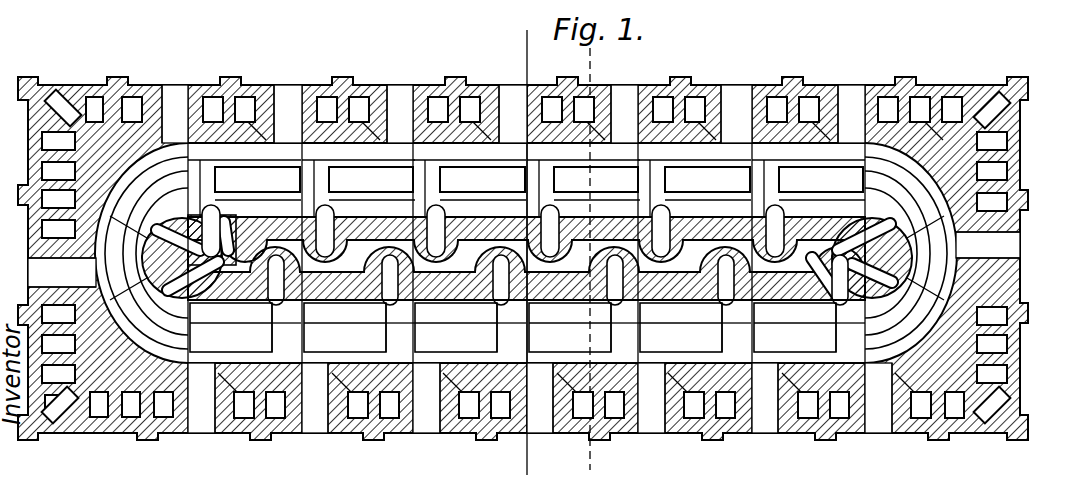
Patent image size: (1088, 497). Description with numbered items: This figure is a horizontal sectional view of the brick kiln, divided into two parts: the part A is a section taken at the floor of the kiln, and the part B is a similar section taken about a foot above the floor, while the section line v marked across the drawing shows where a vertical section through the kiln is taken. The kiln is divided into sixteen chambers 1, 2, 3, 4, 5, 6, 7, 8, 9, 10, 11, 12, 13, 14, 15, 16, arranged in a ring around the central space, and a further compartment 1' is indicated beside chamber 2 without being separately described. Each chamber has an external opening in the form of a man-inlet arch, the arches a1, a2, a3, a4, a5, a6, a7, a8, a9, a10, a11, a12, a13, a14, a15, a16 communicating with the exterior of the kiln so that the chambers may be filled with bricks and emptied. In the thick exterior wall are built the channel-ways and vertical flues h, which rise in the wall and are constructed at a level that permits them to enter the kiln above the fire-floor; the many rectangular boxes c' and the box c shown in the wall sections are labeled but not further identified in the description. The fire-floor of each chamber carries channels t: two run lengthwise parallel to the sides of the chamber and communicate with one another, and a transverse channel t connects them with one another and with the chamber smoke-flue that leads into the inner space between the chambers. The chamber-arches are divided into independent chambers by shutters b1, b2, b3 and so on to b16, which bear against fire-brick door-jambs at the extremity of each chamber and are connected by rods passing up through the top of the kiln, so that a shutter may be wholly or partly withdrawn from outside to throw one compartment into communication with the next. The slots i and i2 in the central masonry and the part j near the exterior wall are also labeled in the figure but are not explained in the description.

The man-inlet arch a1 is at (509, 102).
The man-inlet arch a2 is at (398, 102).
The man-inlet arch a3 is at (285, 102).
The man-inlet arch a4 is at (177, 108).
The man-inlet arch a5 is at (50, 270).
The man-inlet arch a6 is at (197, 410).
The man-inlet arch a7 is at (312, 410).
The man-inlet arch a8 is at (426, 410).
The man-inlet arch a9 is at (540, 410).
The man-inlet arch a10 is at (652, 410).
The man-inlet arch a11 is at (765, 410).
The man-inlet arch a12 is at (878, 410).
The man-inlet arch a13 is at (995, 250).
The man-inlet arch a14 is at (848, 104).
The man-inlet arch a15 is at (735, 102).
The man-inlet arch a16 is at (624, 110).
The floor-level section part A is at (285, 68).
The upper section part B is at (738, 66).
The section line v is at (583, 263).
The joint j is at (1014, 392).
The conductor c' is at (526, 257).
The conductor c is at (413, 240).
The vertical flue h is at (501, 259).
The slot i is at (368, 246).
The slot i2 is at (436, 312).
The fire-floor channel t is at (395, 174).
The shutter b1 is at (400, 185).
The shutter b2 is at (289, 184).
The shutter b3 is at (175, 183).
The shutter b16 is at (504, 180).
The kiln chamber 1 is at (482, 180).
The compartment 1' is at (371, 179).
The kiln chamber 2 is at (357, 181).
The kiln chamber 3 is at (257, 179).
The kiln chamber 4 is at (143, 188).
The kiln chamber 5 is at (127, 324).
The kiln chamber 6 is at (231, 327).
The kiln chamber 7 is at (345, 327).
The kiln chamber 8 is at (456, 327).
The kiln chamber 9 is at (570, 327).
The kiln chamber 10 is at (681, 327).
The kiln chamber 11 is at (795, 327).
The kiln chamber 12 is at (896, 319).
The kiln chamber 13 is at (895, 192).
The kiln chamber 14 is at (821, 179).
The kiln chamber 15 is at (707, 179).
The kiln chamber 16 is at (596, 179).